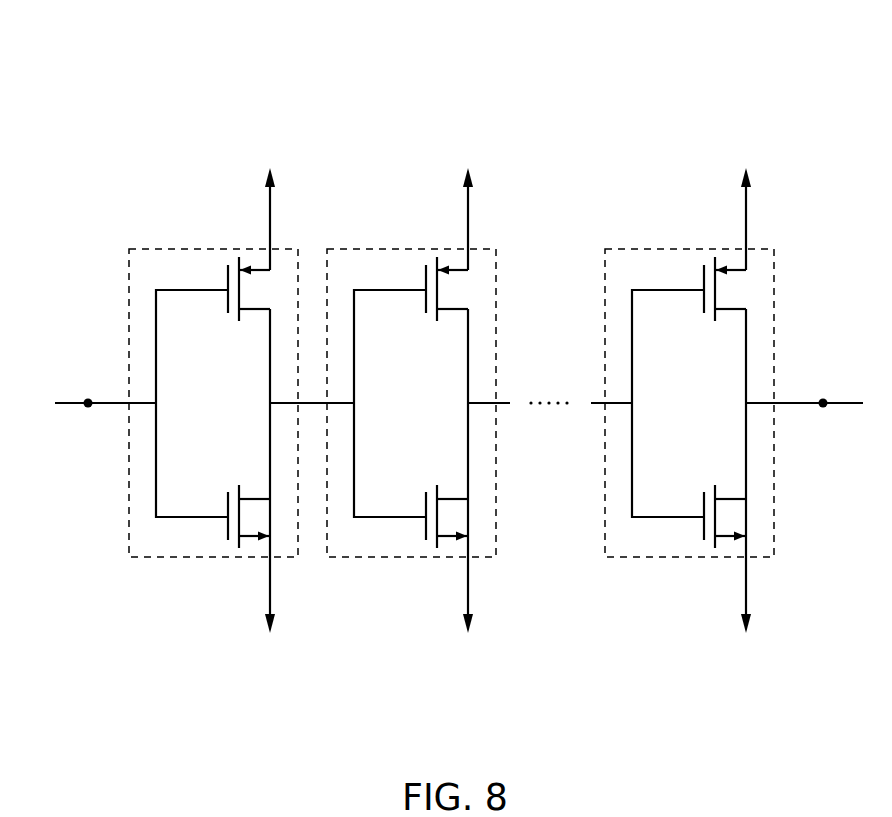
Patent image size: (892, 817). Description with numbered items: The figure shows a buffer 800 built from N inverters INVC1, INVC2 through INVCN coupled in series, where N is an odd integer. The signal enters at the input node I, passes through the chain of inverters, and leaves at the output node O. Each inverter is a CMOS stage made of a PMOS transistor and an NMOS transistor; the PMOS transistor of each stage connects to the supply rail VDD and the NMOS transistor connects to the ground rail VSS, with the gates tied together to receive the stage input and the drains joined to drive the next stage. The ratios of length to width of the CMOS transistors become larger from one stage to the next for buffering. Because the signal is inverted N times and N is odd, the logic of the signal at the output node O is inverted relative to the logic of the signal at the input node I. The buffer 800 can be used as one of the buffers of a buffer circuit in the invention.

The buffer 800 is at (619, 82).
The first inverter INVC1 is at (213, 403).
The second inverter INVC2 is at (411, 403).
The Nth inverter INVCN is at (689, 403).
The supply voltage VDD is at (270, 206).
The ground voltage VSS is at (268, 599).
The input node I is at (88, 398).
The output node O is at (823, 398).